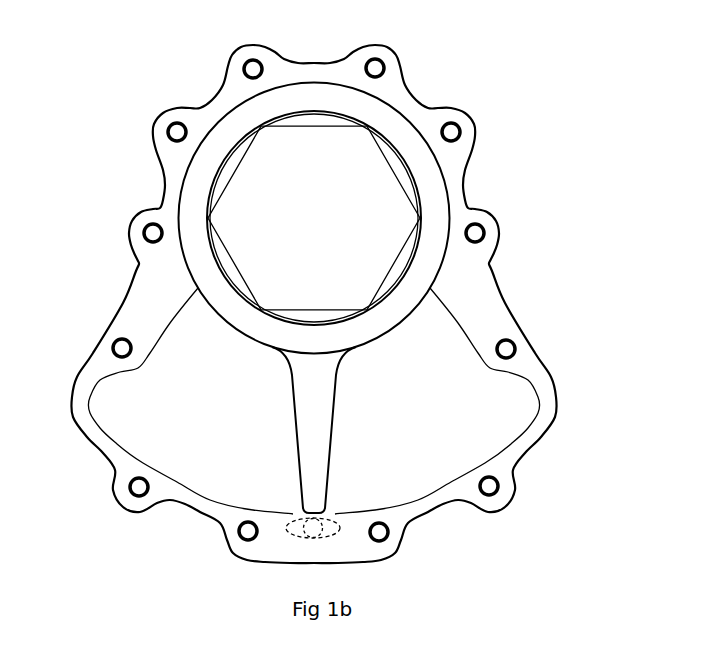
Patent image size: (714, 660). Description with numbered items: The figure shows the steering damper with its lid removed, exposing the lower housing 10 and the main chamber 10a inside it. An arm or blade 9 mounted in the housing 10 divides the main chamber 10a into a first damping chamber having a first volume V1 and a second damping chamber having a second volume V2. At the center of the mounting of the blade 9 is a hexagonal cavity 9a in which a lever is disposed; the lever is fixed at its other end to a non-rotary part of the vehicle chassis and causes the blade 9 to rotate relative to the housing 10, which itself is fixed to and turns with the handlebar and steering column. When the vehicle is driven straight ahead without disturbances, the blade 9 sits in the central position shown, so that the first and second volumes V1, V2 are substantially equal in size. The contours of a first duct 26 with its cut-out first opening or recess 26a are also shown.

The blade 9 is at (322, 433).
The hexagonal cavity 9a is at (313, 221).
The housing 10 is at (467, 213).
The main chamber 10a is at (413, 463).
The first duct 26 is at (323, 528).
The first opening/recess 26a is at (290, 527).
The first volume V1 is at (427, 367).
The second volume V2 is at (220, 378).